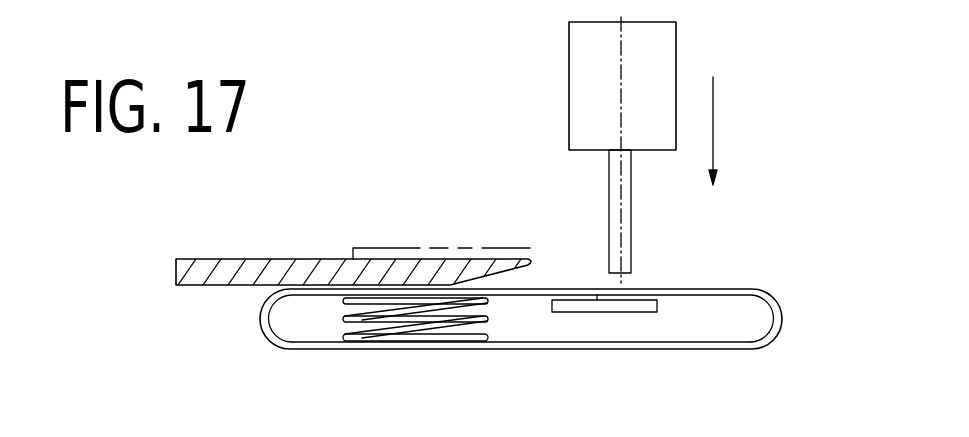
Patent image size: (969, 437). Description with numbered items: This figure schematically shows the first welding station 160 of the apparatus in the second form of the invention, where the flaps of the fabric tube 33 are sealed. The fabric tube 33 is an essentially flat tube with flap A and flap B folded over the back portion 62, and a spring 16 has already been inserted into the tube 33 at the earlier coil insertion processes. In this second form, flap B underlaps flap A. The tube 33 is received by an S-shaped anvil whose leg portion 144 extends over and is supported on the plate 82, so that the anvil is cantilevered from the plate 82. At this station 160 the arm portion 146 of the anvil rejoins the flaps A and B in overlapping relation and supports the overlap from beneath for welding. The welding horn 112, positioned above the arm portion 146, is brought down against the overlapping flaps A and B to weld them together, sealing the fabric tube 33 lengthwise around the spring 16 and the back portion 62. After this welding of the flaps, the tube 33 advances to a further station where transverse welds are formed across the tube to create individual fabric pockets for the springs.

The plate 82 is at (298, 259).
The leg portion 144 is at (481, 247).
The welding horn 112 is at (661, 62).
The station 160 is at (446, 158).
The fabric tube 33 is at (267, 347).
The back portion 62 is at (547, 351).
The spring 16 is at (365, 350).
The arm portion 146 is at (635, 313).
The flap A is at (523, 296).
The flap B is at (680, 289).